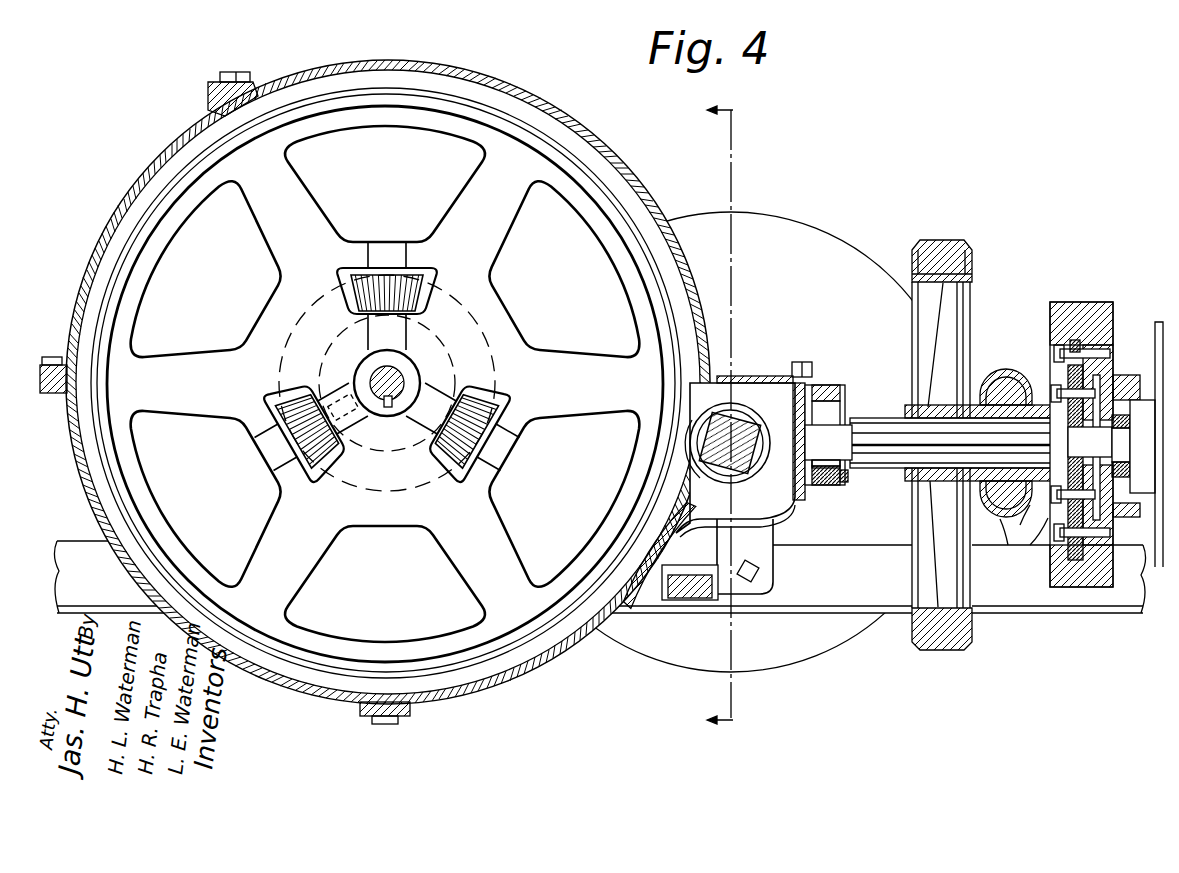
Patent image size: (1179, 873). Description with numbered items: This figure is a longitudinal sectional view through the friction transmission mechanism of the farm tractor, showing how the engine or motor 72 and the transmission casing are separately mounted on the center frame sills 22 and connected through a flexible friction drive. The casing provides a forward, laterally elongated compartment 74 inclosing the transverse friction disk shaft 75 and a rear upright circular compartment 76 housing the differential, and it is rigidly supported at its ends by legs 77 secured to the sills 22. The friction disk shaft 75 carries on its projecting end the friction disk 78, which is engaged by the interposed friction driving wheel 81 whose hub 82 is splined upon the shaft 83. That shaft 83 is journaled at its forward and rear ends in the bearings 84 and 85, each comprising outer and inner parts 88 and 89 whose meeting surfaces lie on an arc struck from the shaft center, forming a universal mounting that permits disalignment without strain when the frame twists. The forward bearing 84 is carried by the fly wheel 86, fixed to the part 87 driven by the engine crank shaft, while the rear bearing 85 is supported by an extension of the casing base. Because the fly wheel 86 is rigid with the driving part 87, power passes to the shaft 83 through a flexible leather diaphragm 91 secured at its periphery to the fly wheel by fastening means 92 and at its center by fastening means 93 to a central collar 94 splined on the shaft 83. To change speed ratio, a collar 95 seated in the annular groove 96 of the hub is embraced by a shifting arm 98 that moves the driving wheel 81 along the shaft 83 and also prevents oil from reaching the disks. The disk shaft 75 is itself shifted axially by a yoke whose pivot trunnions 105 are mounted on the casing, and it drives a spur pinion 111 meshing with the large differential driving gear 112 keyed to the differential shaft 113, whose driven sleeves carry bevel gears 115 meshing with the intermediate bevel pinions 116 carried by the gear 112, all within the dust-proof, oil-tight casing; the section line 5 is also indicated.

The section line 5- 5 is at (729, 417).
The inner frame sill 22 is at (599, 577).
The engine or motor 72 is at (1163, 320).
The forward compartment of the transmission casing 74 is at (778, 378).
The friction disk shaft 75 is at (712, 470).
The rear circular compartment / bearings 76 is at (388, 382).
The legs 77 is at (745, 556).
The friction disk 78 is at (731, 442).
The friction driving wheel 81 is at (945, 244).
The hub 82 is at (915, 404).
The shaft 83 is at (870, 428).
The bearing 84 is at (1099, 444).
The bearing 85 is at (832, 408).
The fly wheel 86 is at (1092, 296).
The driving part 87 is at (1133, 446).
The outer bearing part 88 is at (836, 486).
The inner bearing part 89 is at (848, 482).
The diaphragm 91 is at (1065, 380).
The fastening means 92 is at (1070, 345).
The fastening means 93 is at (1031, 542).
The central collar 94 is at (1030, 522).
The collar 95 is at (993, 543).
The annular groove 96 is at (1003, 511).
The shifting arm 98 is at (992, 380).
The pivot trunnions / yoke shaft 105 is at (690, 598).
The spur pinion 111 is at (765, 366).
The differential driving gear 112 is at (490, 690).
The differential shaft 113 is at (405, 378).
The bevel gear 115 is at (300, 312).
The intermediate bevel gears or pinions 116 is at (458, 448).